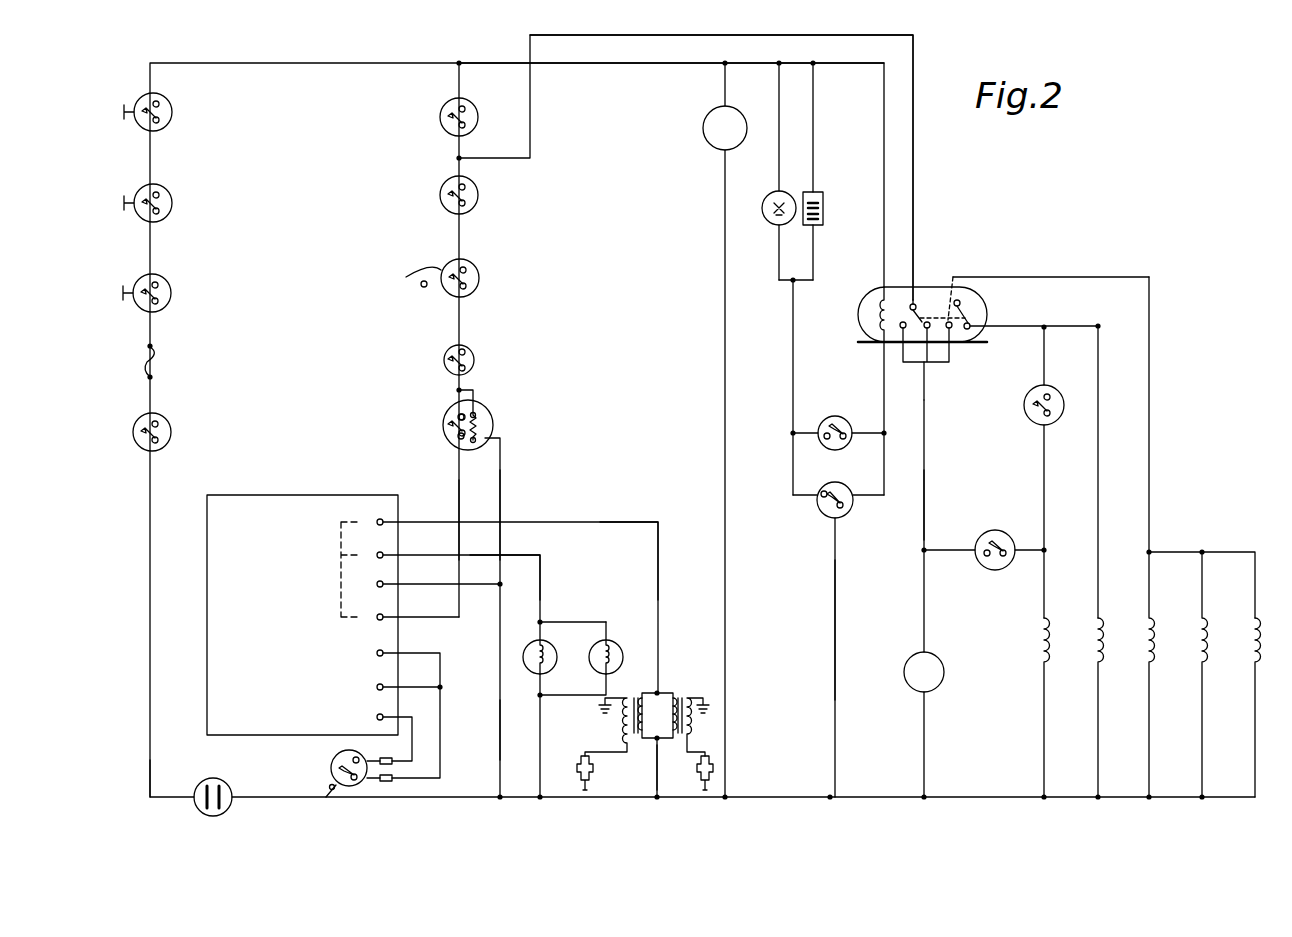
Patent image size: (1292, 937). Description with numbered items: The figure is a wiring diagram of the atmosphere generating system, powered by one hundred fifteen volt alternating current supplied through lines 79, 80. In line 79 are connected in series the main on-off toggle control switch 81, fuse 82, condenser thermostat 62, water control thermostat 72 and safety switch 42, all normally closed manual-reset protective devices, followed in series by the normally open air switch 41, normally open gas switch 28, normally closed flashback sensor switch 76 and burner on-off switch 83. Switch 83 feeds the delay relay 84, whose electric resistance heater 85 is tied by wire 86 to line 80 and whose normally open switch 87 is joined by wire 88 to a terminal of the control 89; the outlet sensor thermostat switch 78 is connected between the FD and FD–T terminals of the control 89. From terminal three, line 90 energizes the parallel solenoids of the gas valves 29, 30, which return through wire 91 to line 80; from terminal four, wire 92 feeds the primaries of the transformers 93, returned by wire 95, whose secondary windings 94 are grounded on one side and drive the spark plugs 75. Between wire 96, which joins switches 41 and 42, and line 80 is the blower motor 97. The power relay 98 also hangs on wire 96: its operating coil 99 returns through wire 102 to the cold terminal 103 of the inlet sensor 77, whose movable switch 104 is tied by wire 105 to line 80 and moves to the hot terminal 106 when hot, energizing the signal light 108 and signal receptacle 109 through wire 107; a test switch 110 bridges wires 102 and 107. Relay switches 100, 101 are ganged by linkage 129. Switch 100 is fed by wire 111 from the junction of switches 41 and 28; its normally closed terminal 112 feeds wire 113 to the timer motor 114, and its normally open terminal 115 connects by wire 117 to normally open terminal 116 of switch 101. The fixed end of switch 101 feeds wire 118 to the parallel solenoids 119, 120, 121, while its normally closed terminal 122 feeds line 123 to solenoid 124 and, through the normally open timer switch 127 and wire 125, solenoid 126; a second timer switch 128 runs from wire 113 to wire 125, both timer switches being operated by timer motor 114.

The safety switch 42 is at (163, 93).
The water control thermostat 72 is at (162, 194).
The condenser thermostat 62 is at (163, 279).
The fuse 82 is at (145, 372).
The main on-off toggle control switch 81 is at (164, 421).
The air switch 41 is at (478, 117).
The gas switch 28 is at (478, 196).
The flashback sensor switch 76 is at (472, 265).
The on-off switch for the burner 83 is at (444, 367).
The delay relay 84 is at (446, 413).
The electric resistance heater 85 is at (482, 414).
The normally open switch 87 is at (447, 424).
The wire 88 is at (456, 492).
The wire 86 is at (501, 504).
The wire 92 is at (592, 522).
The line 90 is at (503, 556).
The control 89 is at (268, 611).
The gas valve 30 is at (555, 654).
The gas valve 29 is at (616, 646).
The transformers 93 is at (686, 688).
The secondary windings 94 is at (653, 727).
The wire 95 is at (657, 775).
The spark plug 75 is at (700, 775).
The wire 91 is at (540, 748).
The outlet sensor thermostat switch 78 is at (330, 775).
The line 80 is at (853, 797).
The line 79 is at (162, 797).
The wire 96 is at (836, 63).
The wire 111 is at (913, 225).
The motor of the blower 97 is at (710, 151).
The signal light 108 is at (775, 195).
The signal receptacle 109 is at (815, 192).
The wire 107 is at (793, 352).
The power relay 98 is at (862, 325).
The operating coil 99 is at (868, 310).
The normally open terminal of switch 100 115 is at (893, 300).
The switch 100 is at (926, 289).
The normally closed terminal of switch 100 112 is at (925, 328).
The linkage 129 is at (963, 277).
The switch 101 is at (985, 305).
The normally closed terminal of switch 101 122 is at (988, 325).
The normally open terminal of switch 101 116 is at (975, 335).
The wire 117 is at (945, 362).
The wire 102 is at (883, 385).
The test switch 110 is at (840, 450).
The inlet sensor 77 is at (840, 520).
The hot terminal 106 is at (825, 490).
The cold terminal 103 is at (855, 505).
The movable switch 104 is at (856, 515).
The wire 105 is at (835, 615).
The timer motor 114 is at (946, 675).
The wire 113 is at (924, 475).
The timer switch 128 is at (990, 572).
The timer switch 127 is at (1048, 390).
The wire 125 is at (1045, 472).
The solenoid 126 is at (1048, 622).
The line 123 is at (1098, 472).
The solenoid 124 is at (1098, 622).
The wire 118 is at (1149, 416).
The operating solenoid 119 is at (1153, 622).
The solenoid 120 is at (1206, 622).
The solenoid 121 is at (1247, 658).